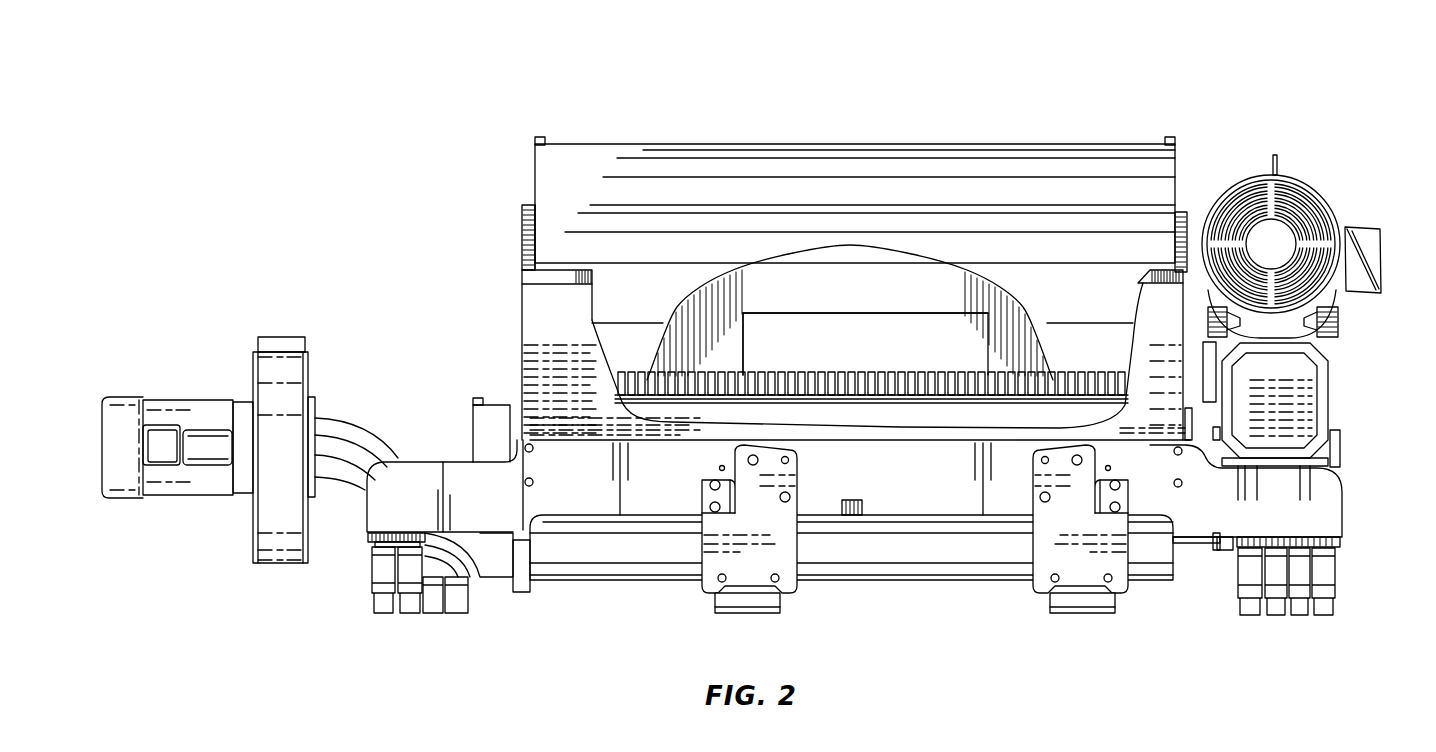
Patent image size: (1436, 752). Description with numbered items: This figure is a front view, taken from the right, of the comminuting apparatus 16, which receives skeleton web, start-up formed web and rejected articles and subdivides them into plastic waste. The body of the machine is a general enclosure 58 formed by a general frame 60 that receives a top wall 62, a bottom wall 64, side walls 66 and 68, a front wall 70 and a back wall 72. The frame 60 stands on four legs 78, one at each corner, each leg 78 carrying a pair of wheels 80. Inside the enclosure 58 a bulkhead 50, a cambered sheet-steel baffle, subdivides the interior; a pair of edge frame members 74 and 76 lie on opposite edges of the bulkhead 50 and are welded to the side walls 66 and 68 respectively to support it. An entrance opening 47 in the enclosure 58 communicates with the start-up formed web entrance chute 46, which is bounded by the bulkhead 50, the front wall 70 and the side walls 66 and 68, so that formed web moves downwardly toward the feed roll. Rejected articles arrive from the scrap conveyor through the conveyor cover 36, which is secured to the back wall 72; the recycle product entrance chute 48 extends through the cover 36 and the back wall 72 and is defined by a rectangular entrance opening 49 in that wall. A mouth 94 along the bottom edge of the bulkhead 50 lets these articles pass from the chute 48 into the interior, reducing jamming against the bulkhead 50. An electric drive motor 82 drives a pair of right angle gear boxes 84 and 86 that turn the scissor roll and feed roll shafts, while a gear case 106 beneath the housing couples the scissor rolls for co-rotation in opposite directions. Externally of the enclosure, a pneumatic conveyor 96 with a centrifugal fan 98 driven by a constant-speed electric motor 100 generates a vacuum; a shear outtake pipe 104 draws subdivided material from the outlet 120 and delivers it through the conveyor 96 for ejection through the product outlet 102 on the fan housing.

The comminuting apparatus 16 is at (451, 83).
The conveyor cover 36 is at (768, 322).
The start-up formed web entrance chute 46 is at (540, 250).
The entrance opening 47 is at (556, 271).
The product entrance chute 48 is at (882, 352).
The rectangular entrance opening 49 is at (747, 356).
The bulkhead 50 is at (582, 187).
The general enclosure 58 is at (466, 343).
The general frame 60 is at (517, 290).
The top wall 62 is at (518, 200).
The bottom wall 64 is at (968, 600).
The side wall 66 is at (512, 342).
The side wall 68 is at (1190, 333).
The front wall 70 is at (568, 324).
The back wall 72 is at (956, 304).
The edge frame member 74 is at (546, 137).
The edge frame member 76 is at (1168, 137).
The leg 78 is at (380, 533).
The wheel 80 is at (410, 615).
The electric drive motor 82 is at (1228, 178).
The right angle gear box 84 is at (1337, 384).
The right angle gear box 86 is at (1274, 400).
The mouth 94 is at (847, 263).
The pneumatic conveyor 96 is at (300, 464).
The centrifugal fan 98 is at (248, 545).
The constant-speed electric motor 100 is at (190, 398).
The product outlet 102 is at (283, 336).
The shear outtake pipe 104 is at (341, 492).
The gear case 106 is at (465, 404).
The outlet 120 is at (521, 600).